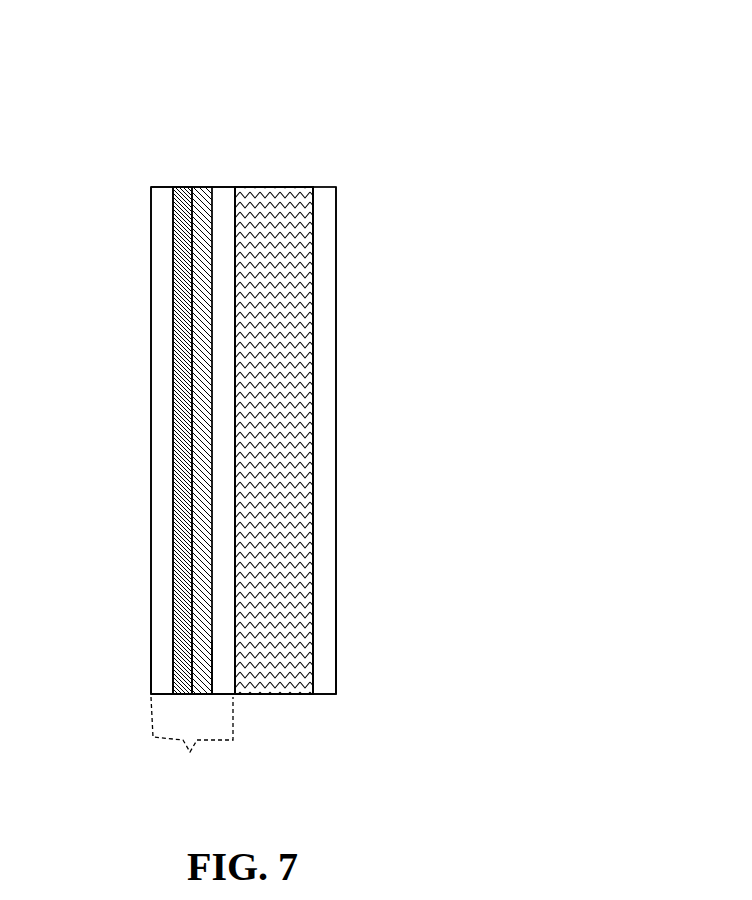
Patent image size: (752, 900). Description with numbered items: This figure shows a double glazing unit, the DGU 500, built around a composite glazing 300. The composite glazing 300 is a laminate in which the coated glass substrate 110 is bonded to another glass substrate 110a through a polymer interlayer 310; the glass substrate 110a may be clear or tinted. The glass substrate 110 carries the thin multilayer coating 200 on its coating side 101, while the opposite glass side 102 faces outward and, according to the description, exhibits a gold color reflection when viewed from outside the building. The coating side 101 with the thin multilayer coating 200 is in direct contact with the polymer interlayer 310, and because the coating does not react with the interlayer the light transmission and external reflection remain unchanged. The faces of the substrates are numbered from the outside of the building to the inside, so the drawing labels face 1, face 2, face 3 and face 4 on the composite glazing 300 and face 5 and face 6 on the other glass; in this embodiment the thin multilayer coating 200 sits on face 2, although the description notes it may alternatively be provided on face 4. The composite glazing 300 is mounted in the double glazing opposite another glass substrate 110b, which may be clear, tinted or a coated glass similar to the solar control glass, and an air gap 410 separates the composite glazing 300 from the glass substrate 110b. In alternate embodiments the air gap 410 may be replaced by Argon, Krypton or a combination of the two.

The DGU 500 is at (240, 107).
The glass side 102 is at (152, 380).
The coating side 101 is at (173, 228).
The face 1 is at (151, 206).
The face 2 is at (173, 228).
The thin multilayer coating 200 is at (183, 197).
The face 3 is at (212, 259).
The face 4 is at (235, 292).
The air gap 410 is at (292, 217).
The face 5 is at (315, 269).
The face 6 is at (337, 213).
The glass substrate 110 is at (161, 679).
The polymer interlayer 310 is at (200, 678).
The glass substrate 110a is at (218, 677).
The glass substrate 110b is at (328, 642).
The composite glazing 300 is at (190, 752).